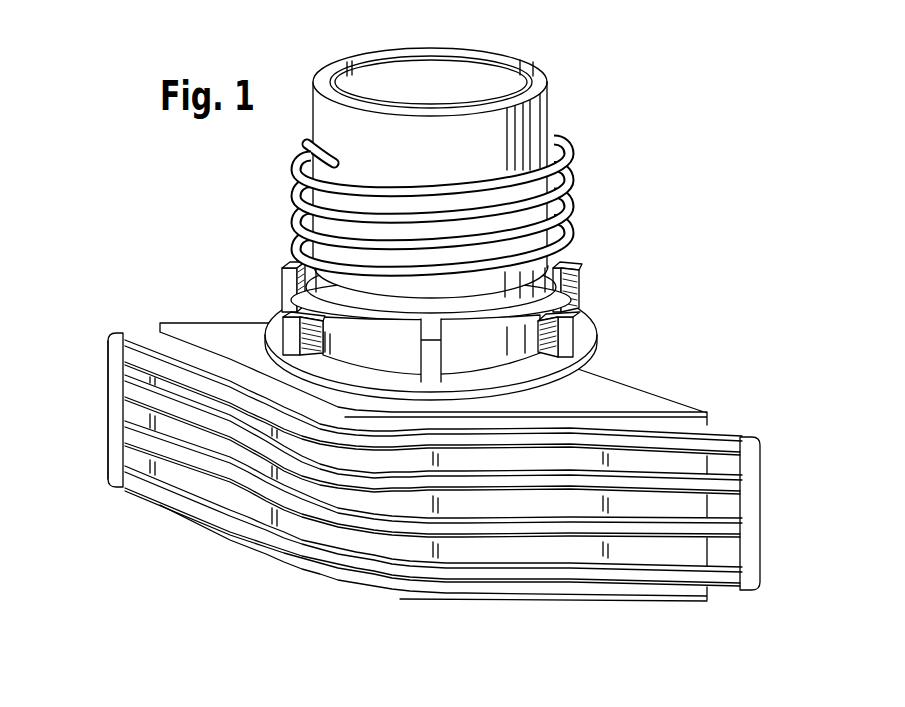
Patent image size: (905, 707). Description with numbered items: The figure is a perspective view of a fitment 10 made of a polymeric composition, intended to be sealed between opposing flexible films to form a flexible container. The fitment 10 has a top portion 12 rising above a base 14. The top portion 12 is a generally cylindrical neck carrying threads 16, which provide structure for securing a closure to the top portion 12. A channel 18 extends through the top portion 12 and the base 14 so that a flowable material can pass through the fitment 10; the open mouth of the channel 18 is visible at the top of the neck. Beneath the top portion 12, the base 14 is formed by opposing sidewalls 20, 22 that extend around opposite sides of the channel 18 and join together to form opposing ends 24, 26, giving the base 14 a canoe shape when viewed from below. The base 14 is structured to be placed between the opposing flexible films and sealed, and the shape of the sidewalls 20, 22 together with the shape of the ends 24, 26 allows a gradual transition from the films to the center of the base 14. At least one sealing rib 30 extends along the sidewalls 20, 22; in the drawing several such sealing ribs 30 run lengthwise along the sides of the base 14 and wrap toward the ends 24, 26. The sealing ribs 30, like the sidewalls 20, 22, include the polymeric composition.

The fitment 10 is at (606, 70).
The top portion 12 is at (598, 181).
The base 14 is at (440, 463).
The threads 16 is at (297, 172).
The channel 18 is at (447, 74).
The sidewall 20 is at (172, 343).
The sidewall 22 is at (213, 324).
The end 24 is at (95, 437).
The end 26 is at (782, 522).
The sealing rib 30 is at (623, 438).